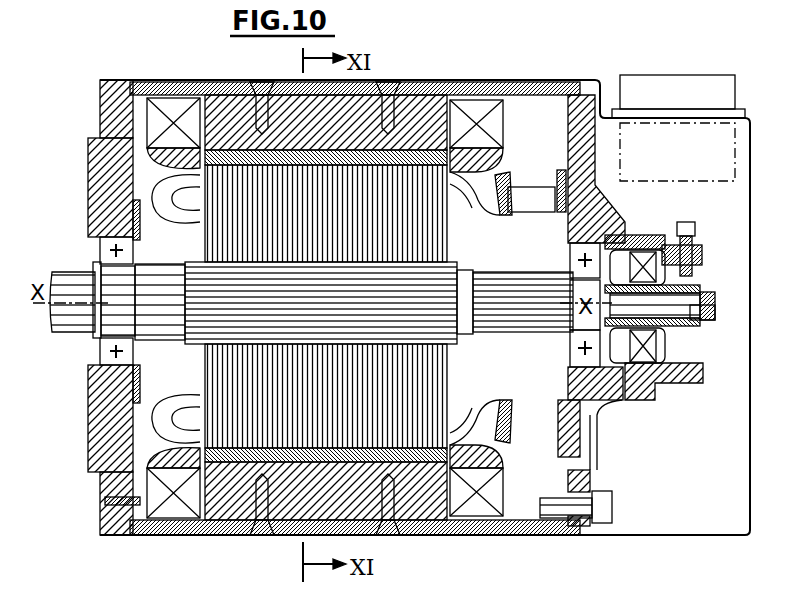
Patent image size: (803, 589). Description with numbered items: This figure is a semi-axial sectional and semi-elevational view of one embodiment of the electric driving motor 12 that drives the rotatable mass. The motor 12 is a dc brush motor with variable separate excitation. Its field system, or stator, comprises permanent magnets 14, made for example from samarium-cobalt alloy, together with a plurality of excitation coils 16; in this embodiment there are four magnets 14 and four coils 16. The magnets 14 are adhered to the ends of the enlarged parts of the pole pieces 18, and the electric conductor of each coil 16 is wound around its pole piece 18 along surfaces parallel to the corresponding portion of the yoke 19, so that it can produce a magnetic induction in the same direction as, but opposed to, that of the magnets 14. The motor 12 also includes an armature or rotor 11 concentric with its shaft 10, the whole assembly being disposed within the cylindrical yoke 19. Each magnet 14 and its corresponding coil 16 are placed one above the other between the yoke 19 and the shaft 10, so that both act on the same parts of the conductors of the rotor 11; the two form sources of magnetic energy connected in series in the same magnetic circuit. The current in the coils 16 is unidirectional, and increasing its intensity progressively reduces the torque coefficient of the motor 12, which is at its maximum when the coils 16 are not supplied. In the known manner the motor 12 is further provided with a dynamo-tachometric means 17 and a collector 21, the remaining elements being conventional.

The shaft 10 is at (418, 302).
The rotor 11 is at (237, 378).
The motor 12 is at (76, 398).
The permanent magnets 14 is at (416, 92).
The coils 16 is at (482, 108).
The dynamo-tachometric means 17 is at (637, 392).
The pole pieces 18 is at (241, 82).
The yoke 19 is at (173, 95).
The collector 21 is at (537, 191).